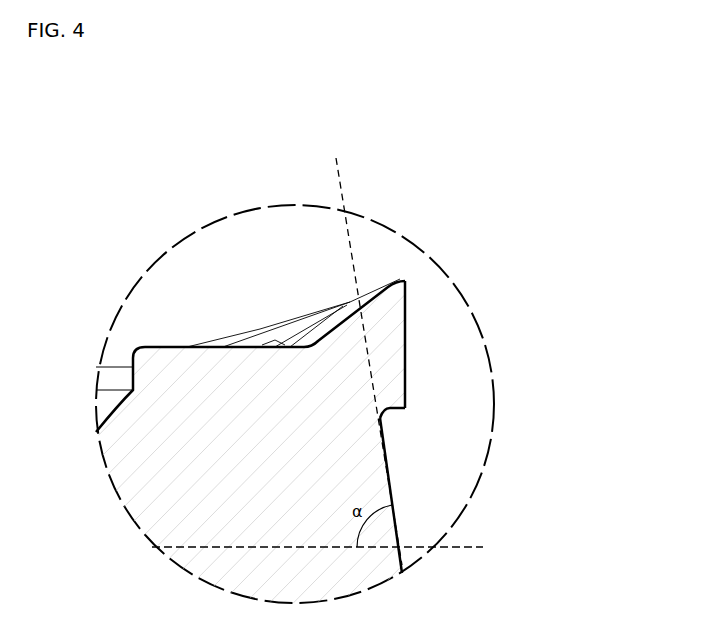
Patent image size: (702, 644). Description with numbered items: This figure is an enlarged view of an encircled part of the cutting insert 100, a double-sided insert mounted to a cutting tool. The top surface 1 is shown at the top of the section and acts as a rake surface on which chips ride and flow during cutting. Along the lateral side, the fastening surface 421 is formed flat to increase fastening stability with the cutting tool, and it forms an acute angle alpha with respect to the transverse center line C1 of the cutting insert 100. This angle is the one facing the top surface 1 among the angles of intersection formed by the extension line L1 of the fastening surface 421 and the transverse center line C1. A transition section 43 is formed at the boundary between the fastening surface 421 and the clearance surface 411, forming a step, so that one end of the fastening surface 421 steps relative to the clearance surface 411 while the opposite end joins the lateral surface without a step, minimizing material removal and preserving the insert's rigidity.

The cutting insert 100 is at (178, 128).
The top surface 1 is at (175, 334).
The clearance surface 411 is at (407, 332).
The transition section 43 is at (384, 413).
The fastening surface 421 is at (388, 470).
The extension line of the fastening surface L1 is at (364, 348).
The transverse center line C1 is at (331, 549).